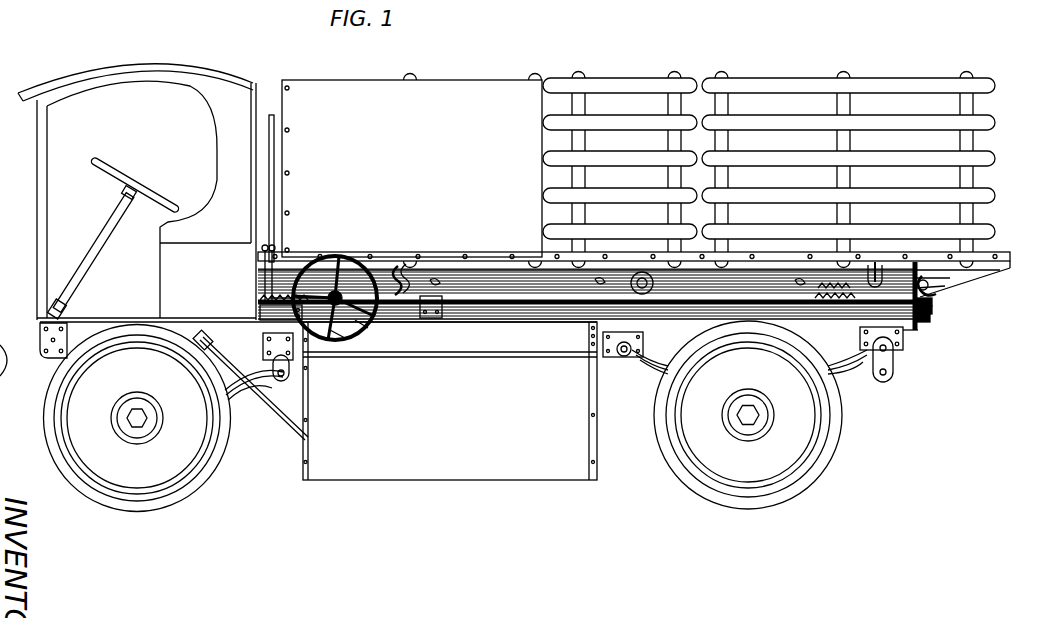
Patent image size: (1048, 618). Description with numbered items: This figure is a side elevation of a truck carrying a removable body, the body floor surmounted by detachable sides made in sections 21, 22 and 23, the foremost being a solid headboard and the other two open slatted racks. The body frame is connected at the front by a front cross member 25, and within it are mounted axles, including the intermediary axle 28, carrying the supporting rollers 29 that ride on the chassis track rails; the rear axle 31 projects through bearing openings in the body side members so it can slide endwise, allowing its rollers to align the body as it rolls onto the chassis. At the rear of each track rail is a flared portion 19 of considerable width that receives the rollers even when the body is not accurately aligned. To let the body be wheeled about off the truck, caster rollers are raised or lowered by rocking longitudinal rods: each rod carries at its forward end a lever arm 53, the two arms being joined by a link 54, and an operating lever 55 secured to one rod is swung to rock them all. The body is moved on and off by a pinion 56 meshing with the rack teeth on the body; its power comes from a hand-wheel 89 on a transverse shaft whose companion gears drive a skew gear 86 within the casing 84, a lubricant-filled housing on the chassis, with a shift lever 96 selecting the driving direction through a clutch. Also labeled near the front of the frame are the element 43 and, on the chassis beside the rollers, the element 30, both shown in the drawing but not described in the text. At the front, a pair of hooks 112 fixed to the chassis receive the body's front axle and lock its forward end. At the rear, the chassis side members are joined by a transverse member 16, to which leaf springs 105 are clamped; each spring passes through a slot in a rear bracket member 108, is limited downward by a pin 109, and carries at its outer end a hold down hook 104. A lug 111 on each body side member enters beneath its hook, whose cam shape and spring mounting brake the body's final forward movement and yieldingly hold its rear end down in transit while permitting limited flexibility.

The side section 21 is at (487, 88).
The side section 22 is at (635, 80).
The side section 23 is at (760, 82).
The operating lever 55 is at (276, 118).
The front cross member 25 is at (287, 264).
The hook 112 is at (401, 268).
The link 54 is at (264, 268).
The lever arm 53 is at (270, 280).
The ratchet bar 43 is at (262, 297).
The casing 84 is at (298, 312).
The shift lever 96 is at (348, 333).
The operating hand-wheel 89 is at (366, 324).
The skew gear 86 is at (438, 283).
The intermediary axle 28 is at (606, 277).
The supporting roller 29 is at (653, 286).
The cable guide 30 is at (806, 280).
The rear axle 31 is at (878, 268).
The pinion 56 is at (828, 304).
The hold down hook 104 is at (938, 270).
The lug 111 is at (938, 281).
The flared portion 19 is at (946, 298).
The rear bracket member 108 is at (934, 303).
The leaf spring 105 is at (934, 309).
The pin 109 is at (932, 316).
The transverse member 16 is at (914, 332).